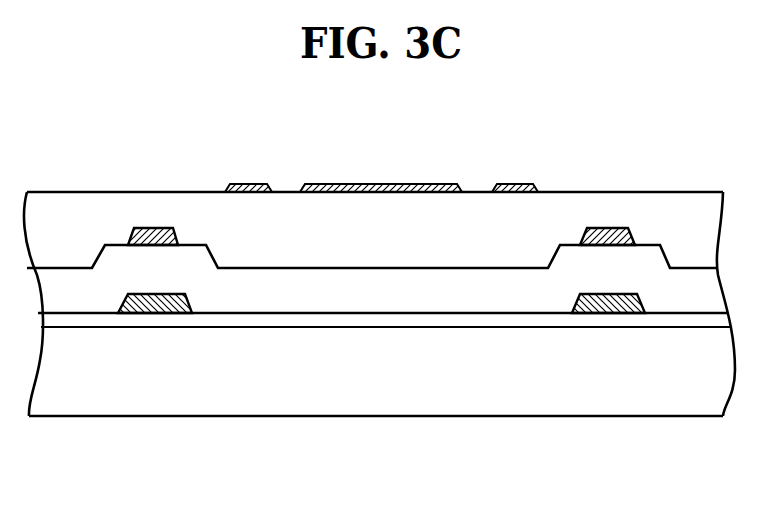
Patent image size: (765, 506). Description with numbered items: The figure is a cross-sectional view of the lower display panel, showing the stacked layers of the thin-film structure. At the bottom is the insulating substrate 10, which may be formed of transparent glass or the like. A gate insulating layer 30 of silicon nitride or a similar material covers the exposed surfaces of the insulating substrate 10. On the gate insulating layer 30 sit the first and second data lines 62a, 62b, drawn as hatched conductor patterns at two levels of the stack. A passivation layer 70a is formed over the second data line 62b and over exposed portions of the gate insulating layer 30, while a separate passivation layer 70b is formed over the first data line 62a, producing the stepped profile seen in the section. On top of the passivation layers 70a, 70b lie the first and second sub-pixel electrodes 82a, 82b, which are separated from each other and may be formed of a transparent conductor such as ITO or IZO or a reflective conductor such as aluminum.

The insulating substrate 10 is at (267, 400).
The gate insulating layer 30 is at (495, 320).
The first data line 62a is at (148, 232).
The second data line 62b is at (155, 300).
The passivation layer 70a is at (339, 282).
The passivation layer 70b is at (408, 254).
The first sub-pixel electrode 82a is at (382, 184).
The second sub-pixel electrode 82b is at (243, 184).